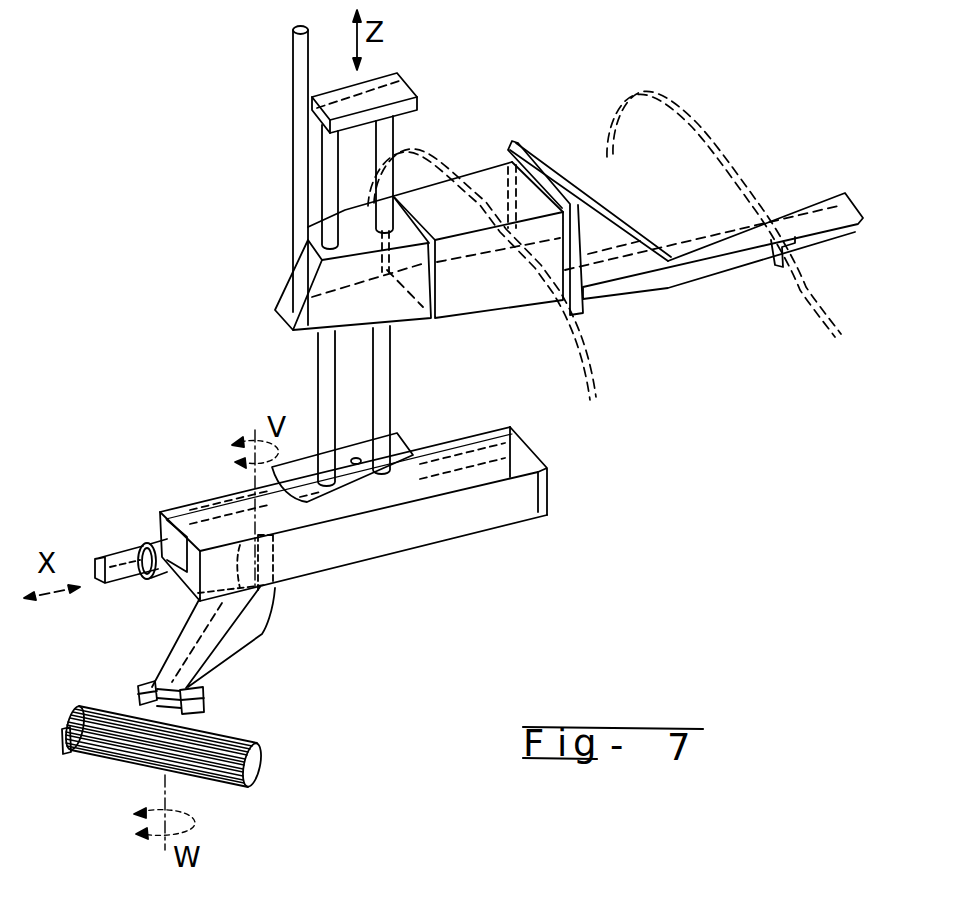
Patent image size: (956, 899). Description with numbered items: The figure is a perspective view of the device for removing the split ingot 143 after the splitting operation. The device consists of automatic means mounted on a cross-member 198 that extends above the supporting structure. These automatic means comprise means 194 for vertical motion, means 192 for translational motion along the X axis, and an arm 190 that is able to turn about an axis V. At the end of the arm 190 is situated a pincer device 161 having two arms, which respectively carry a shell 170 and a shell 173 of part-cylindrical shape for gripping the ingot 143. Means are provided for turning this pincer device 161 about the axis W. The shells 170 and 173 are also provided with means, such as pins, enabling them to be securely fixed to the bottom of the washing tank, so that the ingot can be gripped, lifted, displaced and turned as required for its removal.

The split ingot 143 is at (260, 768).
The pincer device 161 is at (137, 694).
The shell 170 is at (198, 720).
The shell 173 is at (210, 783).
The arm 190 is at (235, 636).
The means for translational motion along the X axis 192 is at (503, 512).
The means for vertical motion 194 is at (333, 268).
The cross-member 198 is at (823, 213).